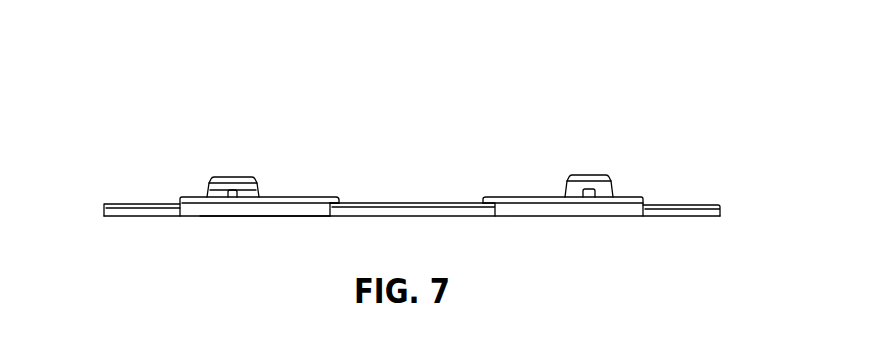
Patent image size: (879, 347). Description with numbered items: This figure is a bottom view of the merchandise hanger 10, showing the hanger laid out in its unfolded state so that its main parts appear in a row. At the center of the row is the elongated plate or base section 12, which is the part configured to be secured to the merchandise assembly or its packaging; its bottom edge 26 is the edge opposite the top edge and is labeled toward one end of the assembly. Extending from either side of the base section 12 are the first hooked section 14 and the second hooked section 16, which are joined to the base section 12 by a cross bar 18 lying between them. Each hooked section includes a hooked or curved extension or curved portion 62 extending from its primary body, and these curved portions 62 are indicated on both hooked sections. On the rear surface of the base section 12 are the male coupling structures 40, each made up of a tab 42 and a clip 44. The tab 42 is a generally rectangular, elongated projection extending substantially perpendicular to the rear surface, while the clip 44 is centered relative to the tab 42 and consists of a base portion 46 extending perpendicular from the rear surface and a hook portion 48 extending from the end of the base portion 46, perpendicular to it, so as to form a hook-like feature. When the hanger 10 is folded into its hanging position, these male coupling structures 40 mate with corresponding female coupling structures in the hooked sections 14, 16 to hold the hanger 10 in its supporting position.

The hanger 10 is at (185, 74).
The base section 12 is at (107, 211).
The first hooked section 14 is at (193, 212).
The second hooked section 16 is at (610, 210).
The cross bar 18 is at (385, 212).
The bottom edge 26 is at (698, 212).
The male coupling structure 40 is at (631, 184).
The tab 42 is at (238, 197).
The clip 44 is at (248, 182).
The base portion 46 is at (218, 192).
The hook portion 48 is at (215, 182).
The curved portion 62 is at (262, 210).